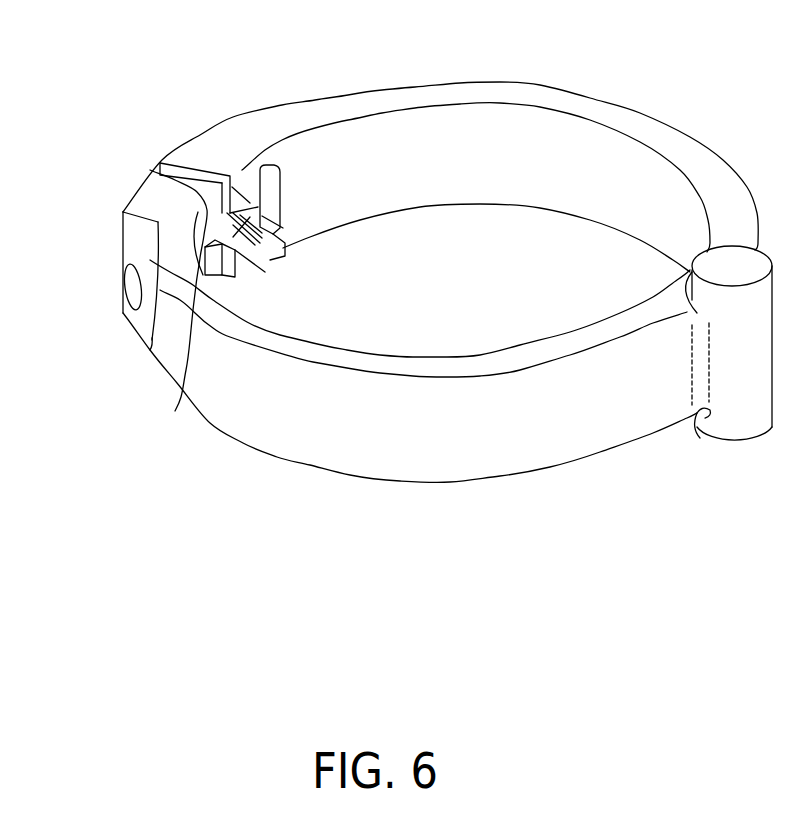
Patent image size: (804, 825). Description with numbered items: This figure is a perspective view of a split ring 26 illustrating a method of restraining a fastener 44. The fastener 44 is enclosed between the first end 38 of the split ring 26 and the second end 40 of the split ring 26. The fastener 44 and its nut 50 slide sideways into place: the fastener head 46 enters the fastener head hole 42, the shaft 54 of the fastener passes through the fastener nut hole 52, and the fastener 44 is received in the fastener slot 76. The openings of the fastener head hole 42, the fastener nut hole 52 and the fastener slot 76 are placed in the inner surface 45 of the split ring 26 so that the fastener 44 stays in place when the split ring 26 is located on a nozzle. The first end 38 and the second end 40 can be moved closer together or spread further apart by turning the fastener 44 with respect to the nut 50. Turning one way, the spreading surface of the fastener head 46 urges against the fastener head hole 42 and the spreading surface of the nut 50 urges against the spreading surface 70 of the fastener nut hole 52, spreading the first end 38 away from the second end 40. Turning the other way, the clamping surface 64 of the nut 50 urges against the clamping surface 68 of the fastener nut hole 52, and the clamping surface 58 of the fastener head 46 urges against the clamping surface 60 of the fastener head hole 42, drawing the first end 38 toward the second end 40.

The split ring 26 is at (466, 434).
The inner surface 45 is at (447, 172).
The first end 38 is at (223, 130).
The second end 40 is at (135, 218).
The fastener head hole 42 is at (160, 170).
The fastener 44 is at (255, 230).
The fastener head 46 is at (152, 338).
The nut 50 is at (300, 196).
The fastener nut hole 52 is at (270, 188).
The shaft 54 is at (258, 243).
The clamping surface 58 is at (175, 410).
The clamping surface 60 is at (238, 284).
The clamping surface 64 is at (248, 225).
The clamping surface 68 is at (235, 200).
The spreading surface 70 is at (282, 200).
The fastener slot 76 is at (233, 280).